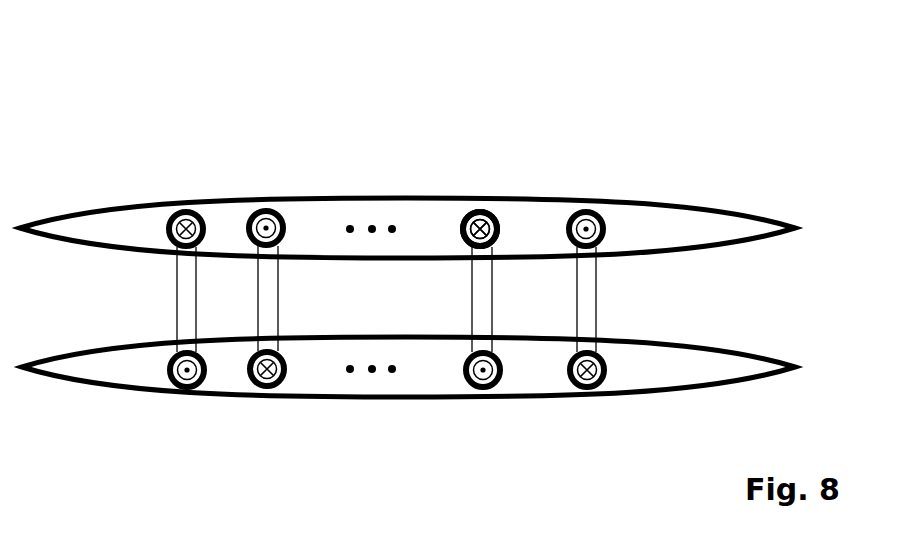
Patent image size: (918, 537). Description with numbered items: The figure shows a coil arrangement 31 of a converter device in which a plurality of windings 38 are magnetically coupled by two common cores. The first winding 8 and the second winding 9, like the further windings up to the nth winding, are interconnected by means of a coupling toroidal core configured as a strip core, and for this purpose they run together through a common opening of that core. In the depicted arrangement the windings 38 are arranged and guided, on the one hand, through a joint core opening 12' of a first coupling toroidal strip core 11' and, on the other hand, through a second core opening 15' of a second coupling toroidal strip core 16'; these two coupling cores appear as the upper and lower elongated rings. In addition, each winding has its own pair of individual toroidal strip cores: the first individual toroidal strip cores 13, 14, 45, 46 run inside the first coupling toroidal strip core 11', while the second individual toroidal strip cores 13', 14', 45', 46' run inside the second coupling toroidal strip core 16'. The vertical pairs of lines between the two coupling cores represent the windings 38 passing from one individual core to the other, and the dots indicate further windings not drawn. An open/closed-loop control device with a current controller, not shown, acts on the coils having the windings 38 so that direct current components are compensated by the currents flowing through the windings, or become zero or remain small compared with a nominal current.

The coil arrangement 31 is at (212, 97).
The first winding 8 is at (371, 187).
The second winding 9 is at (492, 209).
The first coupling toroidal strip core 11' is at (407, 203).
The joint core opening 12' is at (407, 186).
The individual toroidal strip core 13 is at (161, 192).
The individual toroidal strip core 14 is at (279, 192).
The individual toroidal strip core 45 is at (514, 198).
The individual toroidal strip core 46 is at (614, 180).
The second core opening 15' is at (408, 415).
The second coupling toroidal strip core 16' is at (408, 388).
The individual toroidal strip core 13' is at (145, 417).
The individual toroidal strip core 14' is at (246, 422).
The individual toroidal strip core 45' is at (453, 415).
The individual toroidal strip core 46' is at (568, 423).
The windings 38 is at (627, 294).